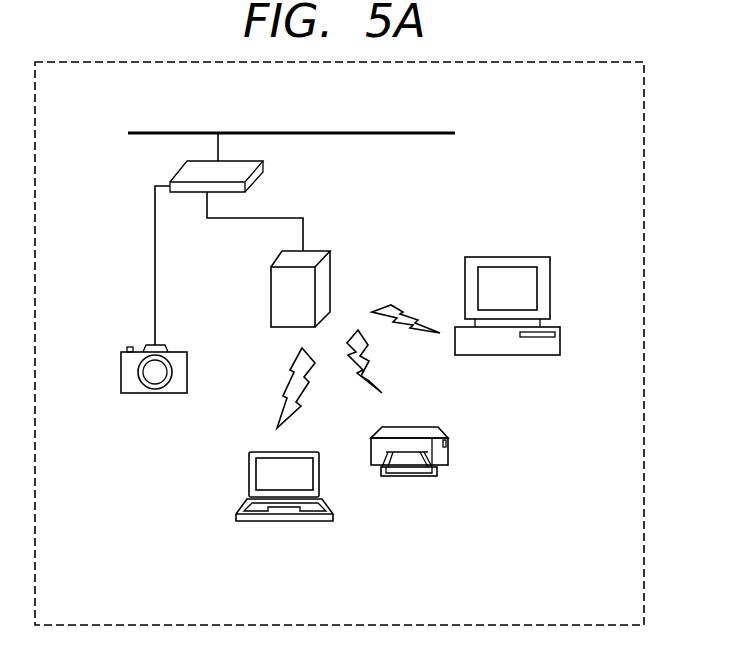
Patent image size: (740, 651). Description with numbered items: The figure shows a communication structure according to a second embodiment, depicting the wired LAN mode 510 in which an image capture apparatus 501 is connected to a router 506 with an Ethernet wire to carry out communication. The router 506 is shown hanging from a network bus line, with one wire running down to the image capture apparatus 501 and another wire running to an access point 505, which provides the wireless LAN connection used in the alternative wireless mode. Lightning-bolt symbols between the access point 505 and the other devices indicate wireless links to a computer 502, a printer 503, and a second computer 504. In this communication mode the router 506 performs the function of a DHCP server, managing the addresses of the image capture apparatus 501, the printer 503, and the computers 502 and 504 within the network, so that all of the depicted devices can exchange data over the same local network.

The wired LAN mode 510 is at (548, 62).
The router 506 is at (262, 167).
The access point 505 is at (332, 258).
The computer 504 is at (550, 271).
The printer 503 is at (453, 447).
The computer 502 is at (268, 523).
The image capture apparatus 501 is at (142, 393).